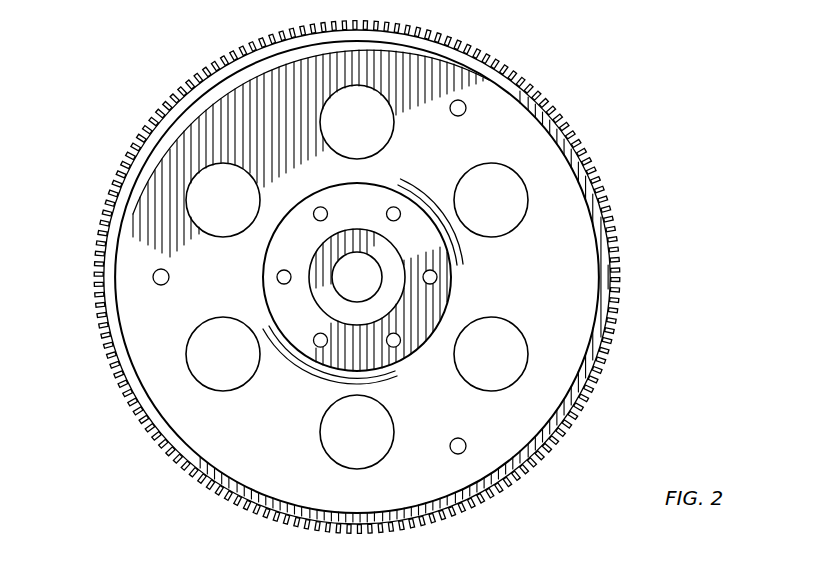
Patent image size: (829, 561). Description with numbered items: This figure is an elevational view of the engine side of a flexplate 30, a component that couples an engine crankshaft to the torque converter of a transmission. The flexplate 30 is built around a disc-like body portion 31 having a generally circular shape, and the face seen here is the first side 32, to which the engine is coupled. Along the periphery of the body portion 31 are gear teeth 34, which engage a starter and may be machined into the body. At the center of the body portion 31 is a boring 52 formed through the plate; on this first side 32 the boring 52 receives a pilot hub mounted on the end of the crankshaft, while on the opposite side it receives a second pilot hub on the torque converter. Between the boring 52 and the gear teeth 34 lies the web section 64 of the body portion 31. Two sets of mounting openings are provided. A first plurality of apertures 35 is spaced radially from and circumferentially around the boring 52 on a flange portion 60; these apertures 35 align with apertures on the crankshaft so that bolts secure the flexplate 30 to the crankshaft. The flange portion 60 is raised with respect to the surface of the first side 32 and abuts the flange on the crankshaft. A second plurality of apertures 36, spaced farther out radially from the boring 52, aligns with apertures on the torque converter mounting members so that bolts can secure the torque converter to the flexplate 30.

The flexplate 30 is at (640, 190).
The body portion 31 is at (579, 157).
The first side 32 is at (536, 288).
The gear teeth 34 is at (615, 256).
The first plurality of apertures 35 is at (321, 207).
The second plurality of apertures 36 is at (463, 103).
The boring 52 is at (362, 281).
The flange portion 60 is at (283, 294).
The web section 64 is at (497, 131).